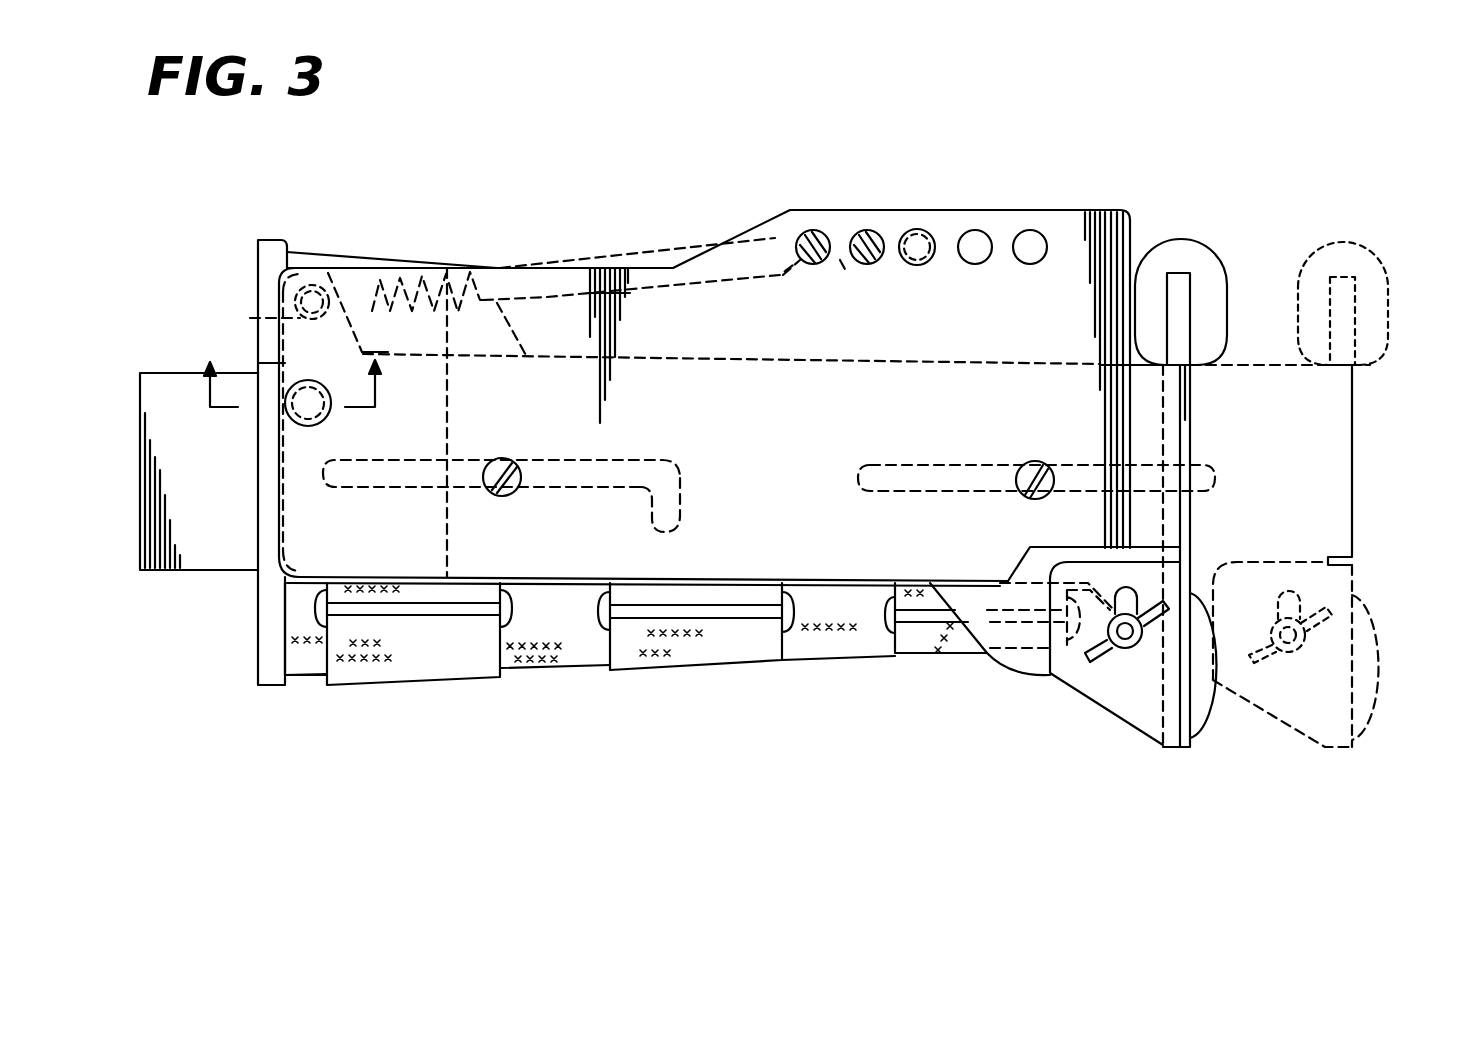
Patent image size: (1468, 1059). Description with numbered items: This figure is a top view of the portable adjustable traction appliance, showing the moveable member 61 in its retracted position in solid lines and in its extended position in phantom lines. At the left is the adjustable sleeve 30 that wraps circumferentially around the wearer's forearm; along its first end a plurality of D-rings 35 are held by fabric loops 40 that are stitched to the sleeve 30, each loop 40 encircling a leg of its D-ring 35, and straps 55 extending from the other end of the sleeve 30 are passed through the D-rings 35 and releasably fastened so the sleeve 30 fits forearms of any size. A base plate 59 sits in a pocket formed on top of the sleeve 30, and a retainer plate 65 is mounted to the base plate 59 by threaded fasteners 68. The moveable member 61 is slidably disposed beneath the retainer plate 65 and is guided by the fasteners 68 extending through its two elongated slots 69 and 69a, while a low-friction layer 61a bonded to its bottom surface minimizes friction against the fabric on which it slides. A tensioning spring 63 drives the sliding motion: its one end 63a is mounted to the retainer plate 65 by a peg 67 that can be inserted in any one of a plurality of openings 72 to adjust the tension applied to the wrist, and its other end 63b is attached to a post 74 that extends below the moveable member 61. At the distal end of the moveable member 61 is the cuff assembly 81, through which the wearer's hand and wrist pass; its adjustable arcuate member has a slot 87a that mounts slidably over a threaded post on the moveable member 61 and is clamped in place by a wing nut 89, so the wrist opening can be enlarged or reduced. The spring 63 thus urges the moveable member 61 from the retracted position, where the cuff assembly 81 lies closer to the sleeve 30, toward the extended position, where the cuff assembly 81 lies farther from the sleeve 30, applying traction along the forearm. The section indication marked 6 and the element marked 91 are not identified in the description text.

The adjustable sleeve 30 is at (583, 652).
The D-rings 35 is at (580, 607).
The fabric loops 40 is at (420, 598).
The straps 55 is at (428, 668).
The base plate 59 is at (176, 572).
The moveable member 61 is at (1182, 418).
The low-friction layer 61a is at (446, 513).
The tensioning spring 63 is at (448, 268).
The one end of tensioning spring 63a is at (907, 232).
The other end of tensioning spring 63b is at (297, 318).
The retainer plate 65 is at (1090, 212).
The peg 67 is at (925, 240).
The threaded fasteners 68 is at (524, 469).
The elongated slot 69 is at (612, 462).
The elongated slot 69a is at (688, 505).
The openings 72 is at (1030, 232).
The post 74 is at (318, 287).
The cuff assembly 81 is at (1190, 252).
The slot 87a is at (1123, 585).
The wing nut 89 is at (1093, 658).
The pivot pin 91 is at (300, 416).
The section line 6- 6 is at (292, 407).